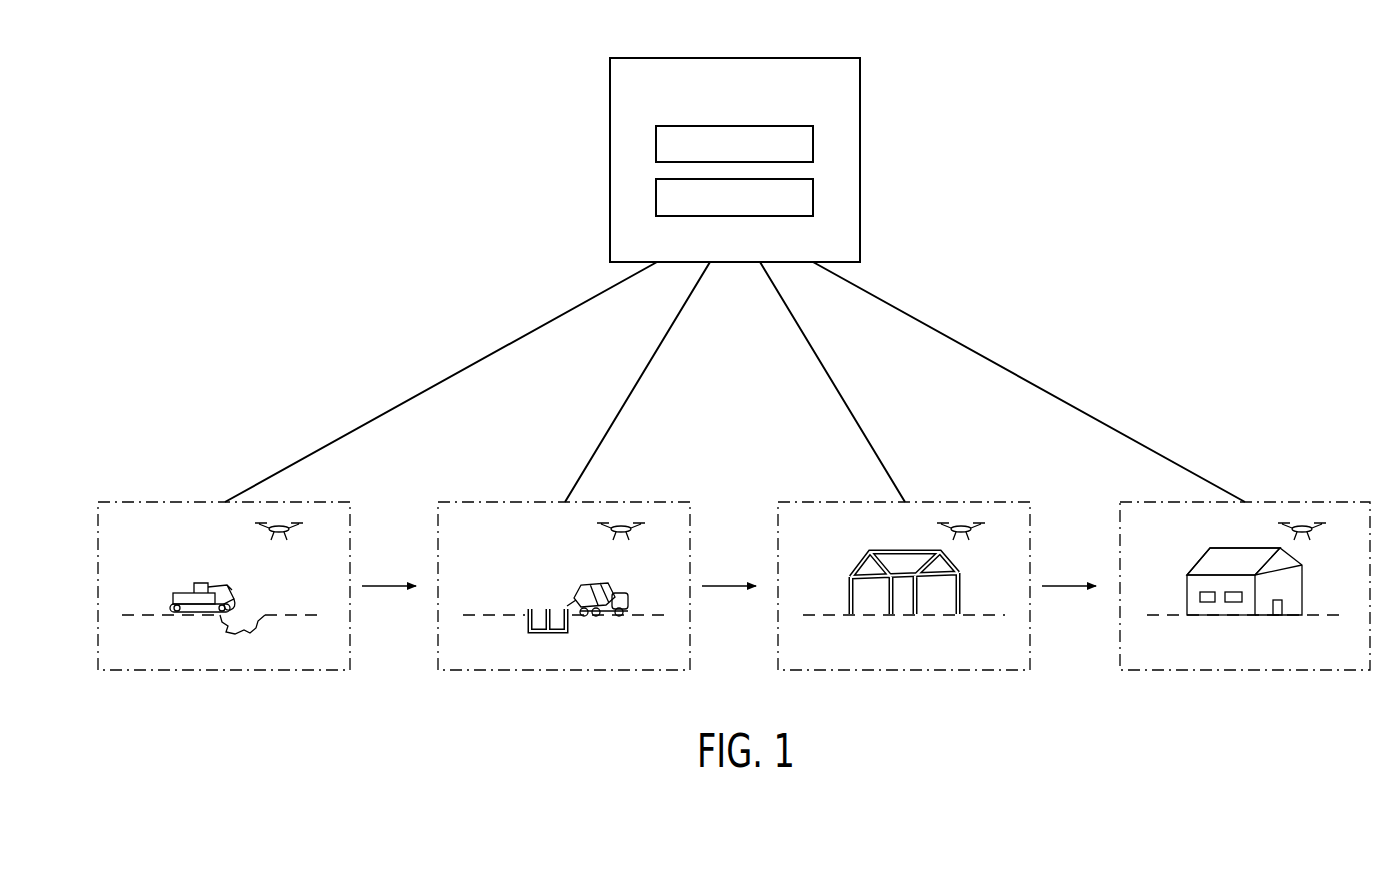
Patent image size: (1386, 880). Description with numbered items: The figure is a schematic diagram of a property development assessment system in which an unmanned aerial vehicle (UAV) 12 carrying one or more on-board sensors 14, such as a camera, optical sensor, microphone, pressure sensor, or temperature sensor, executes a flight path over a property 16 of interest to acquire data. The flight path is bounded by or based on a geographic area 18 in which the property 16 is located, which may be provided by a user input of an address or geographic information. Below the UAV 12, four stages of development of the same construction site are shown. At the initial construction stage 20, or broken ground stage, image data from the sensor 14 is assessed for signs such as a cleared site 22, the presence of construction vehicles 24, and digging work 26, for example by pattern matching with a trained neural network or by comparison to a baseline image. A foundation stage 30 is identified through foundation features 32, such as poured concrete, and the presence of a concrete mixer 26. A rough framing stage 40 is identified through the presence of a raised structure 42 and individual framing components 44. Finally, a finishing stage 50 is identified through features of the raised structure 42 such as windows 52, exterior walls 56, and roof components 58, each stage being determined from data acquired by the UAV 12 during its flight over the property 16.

The unmanned aerial vehicle 12 is at (735, 58).
The on-board sensor 14 is at (735, 126).
The property 16 is at (740, 216).
The geographic area 18 is at (160, 502).
The initial construction stage 20 is at (160, 452).
The cleared site 22 is at (275, 615).
The construction vehicle 24 is at (185, 596).
The digging work 26 is at (228, 628).
The foundation stage 30 is at (500, 452).
The foundation feature 32 is at (530, 634).
The rough framing stage 40 is at (967, 452).
The raised structure 42 is at (1102, 605).
The framing component 44 is at (953, 600).
The finishing stage 50 is at (1307, 452).
The window 52 is at (1200, 597).
The exterior wall 56 is at (1233, 602).
The roof component 58 is at (1210, 558).